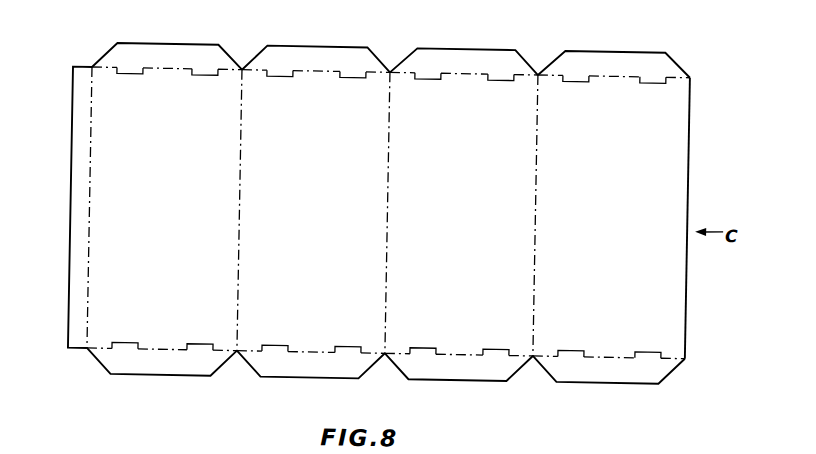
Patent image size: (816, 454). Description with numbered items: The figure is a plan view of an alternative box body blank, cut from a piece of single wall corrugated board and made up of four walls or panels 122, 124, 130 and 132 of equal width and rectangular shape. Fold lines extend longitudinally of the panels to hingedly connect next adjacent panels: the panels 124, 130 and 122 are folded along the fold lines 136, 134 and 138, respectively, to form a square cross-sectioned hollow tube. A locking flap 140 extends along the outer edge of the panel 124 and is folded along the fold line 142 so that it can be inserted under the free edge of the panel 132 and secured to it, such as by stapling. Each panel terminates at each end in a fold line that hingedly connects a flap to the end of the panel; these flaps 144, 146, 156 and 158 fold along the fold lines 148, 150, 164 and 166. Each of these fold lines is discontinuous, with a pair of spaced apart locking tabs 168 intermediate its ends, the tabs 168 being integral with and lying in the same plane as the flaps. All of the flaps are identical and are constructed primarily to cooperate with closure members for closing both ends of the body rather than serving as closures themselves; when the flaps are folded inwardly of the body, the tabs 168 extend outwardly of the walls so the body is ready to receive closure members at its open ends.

The locking flap 140 is at (73, 146).
The fold line 142 is at (94, 155).
The fold line 136 is at (242, 152).
The fold line 134 is at (390, 154).
The fold line 138 is at (538, 145).
The panel 124 is at (168, 237).
The panel 130 is at (321, 240).
The panel 122 is at (473, 242).
The panel 132 is at (628, 242).
The flap 146 is at (156, 41).
The flap 156 is at (304, 41).
The flap 144 is at (456, 41).
The flap 158 is at (608, 42).
The fold line 150 is at (165, 64).
The fold line 164 is at (308, 66).
The fold line 148 is at (460, 66).
The fold line 166 is at (608, 67).
The locking tabs 168 is at (120, 73).